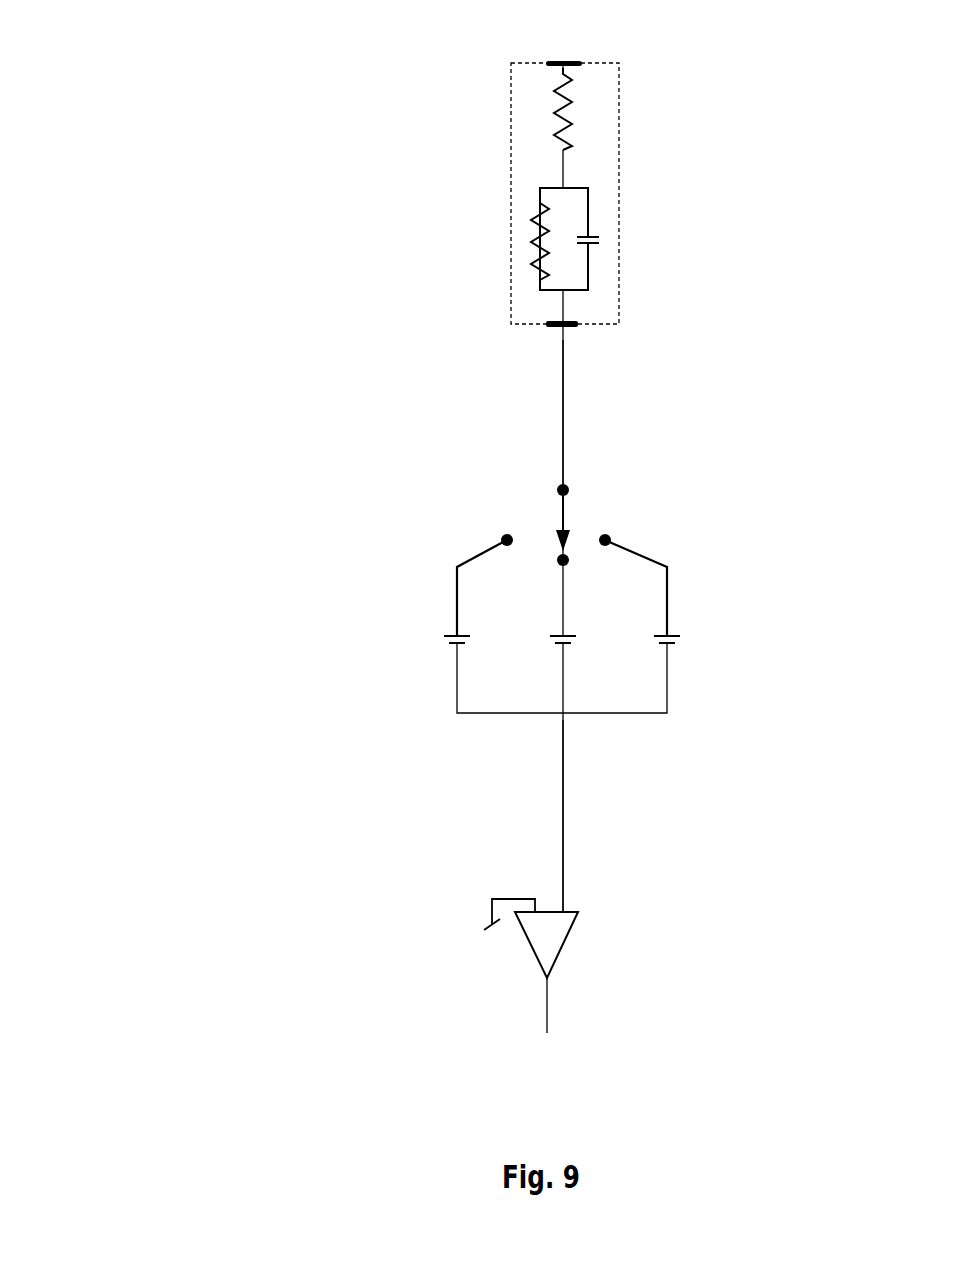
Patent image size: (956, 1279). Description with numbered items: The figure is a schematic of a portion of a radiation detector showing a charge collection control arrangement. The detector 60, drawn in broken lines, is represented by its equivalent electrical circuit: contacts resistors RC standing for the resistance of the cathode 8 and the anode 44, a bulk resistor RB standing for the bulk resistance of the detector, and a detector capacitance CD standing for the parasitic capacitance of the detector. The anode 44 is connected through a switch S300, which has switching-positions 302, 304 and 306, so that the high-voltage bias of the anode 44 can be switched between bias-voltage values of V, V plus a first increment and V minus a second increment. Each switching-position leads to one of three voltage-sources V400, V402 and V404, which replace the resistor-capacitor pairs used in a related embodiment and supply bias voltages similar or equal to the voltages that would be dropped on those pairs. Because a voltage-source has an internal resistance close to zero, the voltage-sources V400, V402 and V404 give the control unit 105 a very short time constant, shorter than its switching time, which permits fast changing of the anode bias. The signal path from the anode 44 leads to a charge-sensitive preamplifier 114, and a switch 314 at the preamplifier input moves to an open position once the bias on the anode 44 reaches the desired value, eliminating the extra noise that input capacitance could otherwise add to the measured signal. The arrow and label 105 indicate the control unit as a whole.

The cathode 8 is at (563, 62).
The detector 60 is at (511, 117).
The contacts resistors RC is at (567, 105).
The bulk resistor RB is at (533, 238).
The detector capacitance CD is at (588, 222).
The anode 44 is at (547, 326).
The switch S300 is at (565, 478).
The switching-position 302 is at (565, 553).
The switching-position 304 is at (503, 538).
The switching-position 306 is at (609, 538).
The voltage-source V400 is at (452, 635).
The voltage-source V402 is at (565, 633).
The voltage-source V404 is at (673, 633).
The switch 314 is at (560, 912).
The charge-sensitive preamplifier 114 is at (532, 948).
The control unit 105 is at (186, 649).